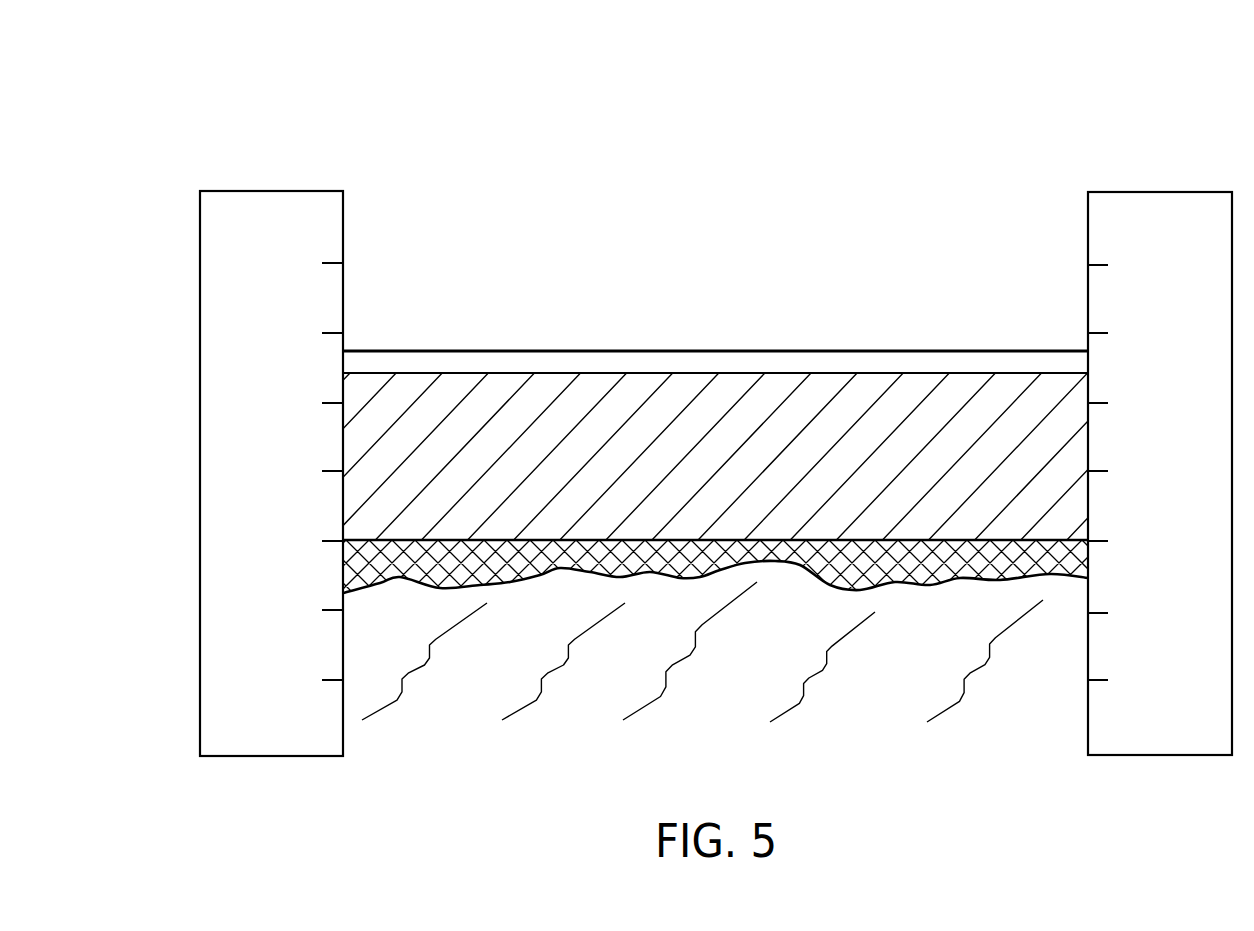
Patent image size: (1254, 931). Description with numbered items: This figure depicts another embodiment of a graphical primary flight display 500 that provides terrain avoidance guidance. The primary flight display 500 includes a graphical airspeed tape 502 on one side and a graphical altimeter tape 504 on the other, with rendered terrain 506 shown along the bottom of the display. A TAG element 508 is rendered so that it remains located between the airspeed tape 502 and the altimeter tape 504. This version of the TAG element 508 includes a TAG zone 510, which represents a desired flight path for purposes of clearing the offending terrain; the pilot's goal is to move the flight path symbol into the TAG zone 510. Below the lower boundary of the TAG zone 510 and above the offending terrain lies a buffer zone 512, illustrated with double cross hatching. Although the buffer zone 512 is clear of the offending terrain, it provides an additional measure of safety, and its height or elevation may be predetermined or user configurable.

The graphical primary flight display 500 is at (240, 115).
The graphical airspeed tape 502 is at (198, 230).
The graphical altimeter tape 504 is at (1156, 192).
The rendered terrain 506 is at (805, 700).
The TAG element 508 is at (638, 332).
The TAG zone 510 is at (773, 403).
The buffer zone 512 is at (510, 582).